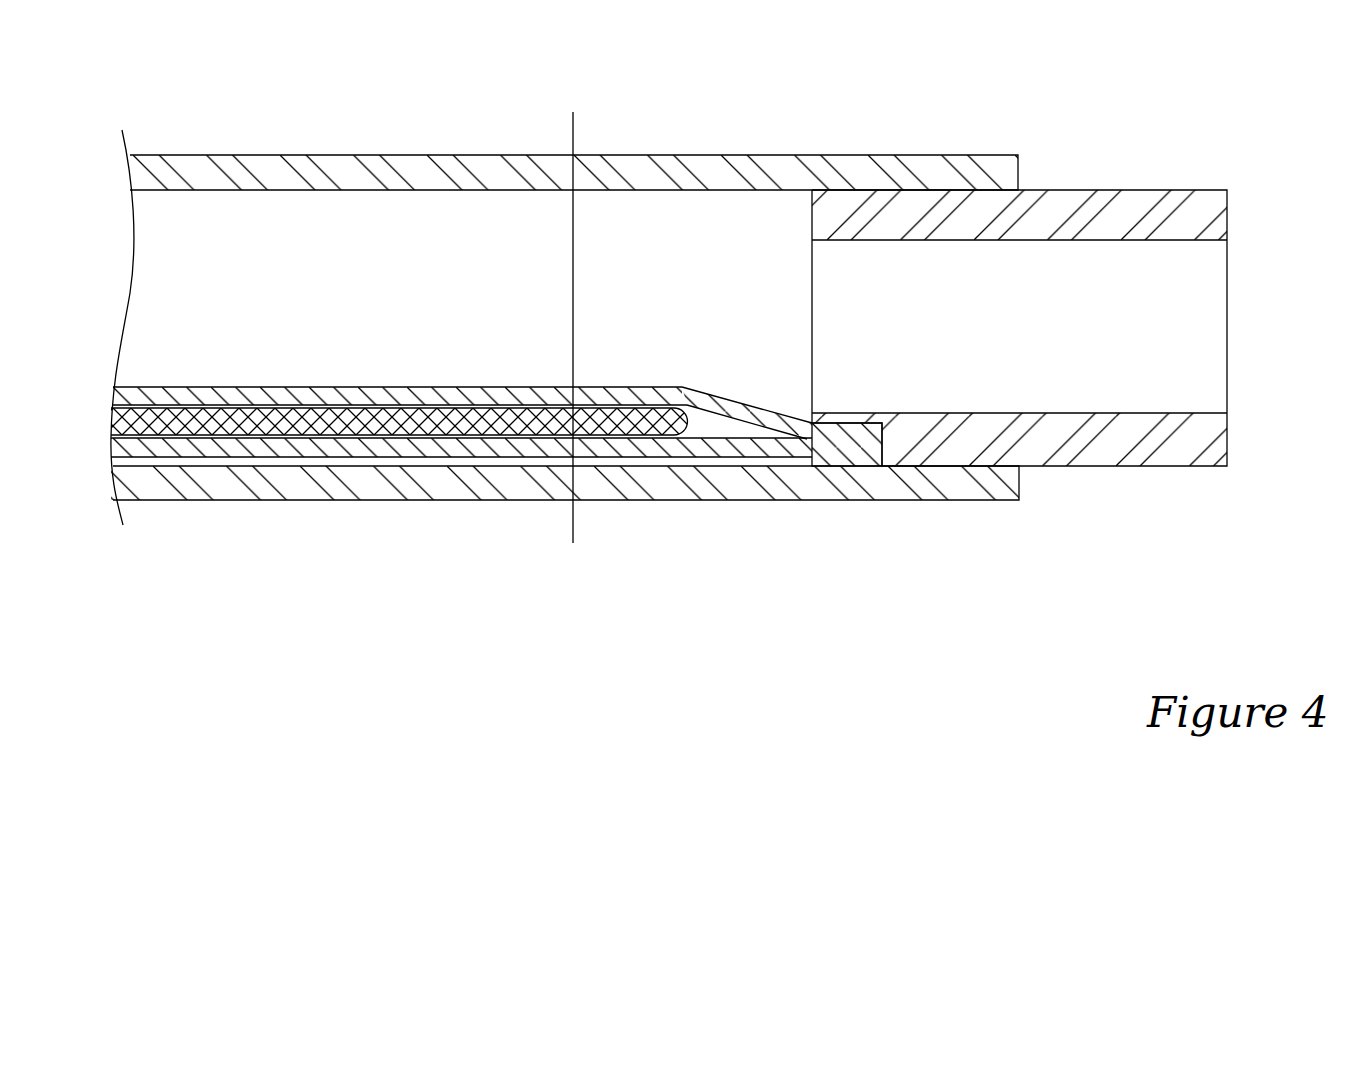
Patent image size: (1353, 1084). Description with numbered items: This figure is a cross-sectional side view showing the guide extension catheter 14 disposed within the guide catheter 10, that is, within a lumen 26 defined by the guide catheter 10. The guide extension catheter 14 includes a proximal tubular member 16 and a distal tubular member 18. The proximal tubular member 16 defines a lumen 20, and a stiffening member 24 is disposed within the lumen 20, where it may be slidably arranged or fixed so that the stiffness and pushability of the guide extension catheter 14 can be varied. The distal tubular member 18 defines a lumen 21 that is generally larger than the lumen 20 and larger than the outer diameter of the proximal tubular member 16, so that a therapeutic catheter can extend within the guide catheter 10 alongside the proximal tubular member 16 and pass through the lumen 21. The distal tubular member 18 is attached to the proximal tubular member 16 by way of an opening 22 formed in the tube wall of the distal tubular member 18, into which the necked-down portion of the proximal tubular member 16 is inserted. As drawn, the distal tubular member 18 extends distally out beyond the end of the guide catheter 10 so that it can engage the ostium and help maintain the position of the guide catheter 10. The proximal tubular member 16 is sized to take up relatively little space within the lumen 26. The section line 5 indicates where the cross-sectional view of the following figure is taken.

The section line 5- 5 is at (573, 112).
The guide catheter 10 is at (713, 168).
The guide extension catheter 14 is at (461, 394).
The proximal tubular member 16 is at (390, 395).
The distal tubular member 18 is at (1057, 195).
The lumen 20 is at (707, 427).
The lumen 21 is at (1197, 283).
The opening 22 is at (840, 458).
The stiffening member 24 is at (252, 423).
The lumen 26 is at (285, 220).